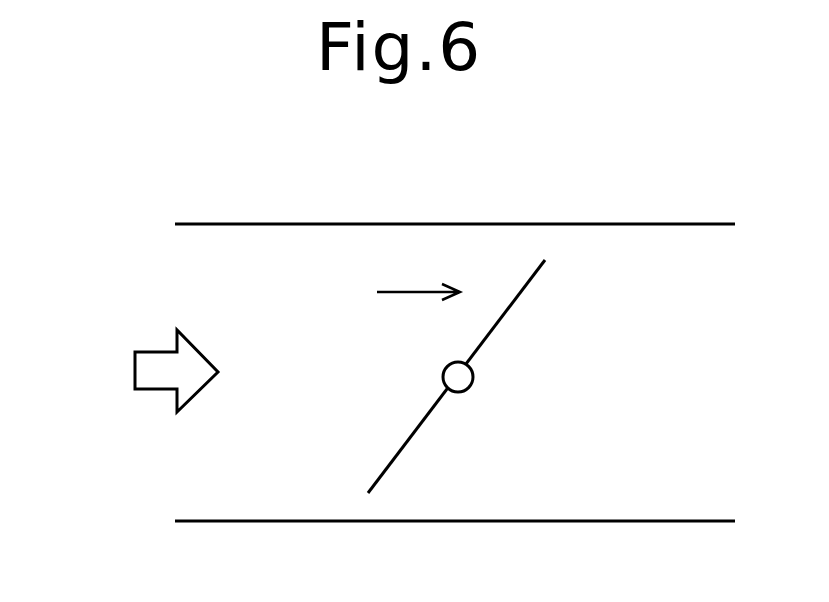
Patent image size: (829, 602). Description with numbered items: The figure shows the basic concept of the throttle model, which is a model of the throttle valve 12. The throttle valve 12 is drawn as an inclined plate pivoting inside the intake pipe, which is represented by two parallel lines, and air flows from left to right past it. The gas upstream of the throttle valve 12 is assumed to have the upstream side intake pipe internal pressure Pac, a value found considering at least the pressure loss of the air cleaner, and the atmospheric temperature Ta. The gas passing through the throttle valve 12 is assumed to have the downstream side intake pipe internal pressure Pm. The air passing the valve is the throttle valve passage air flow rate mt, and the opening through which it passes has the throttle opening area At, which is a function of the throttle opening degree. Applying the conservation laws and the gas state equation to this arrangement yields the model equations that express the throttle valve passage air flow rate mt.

The throttle valve 12 is at (530, 282).
The throttle opening area At is at (478, 203).
The upstream side intake pipe internal pressure Pac is at (96, 350).
The atmospheric temperature Ta is at (86, 390).
The throttle valve passage air flow rate mt is at (418, 273).
The downstream side intake pipe internal pressure Pm is at (569, 380).